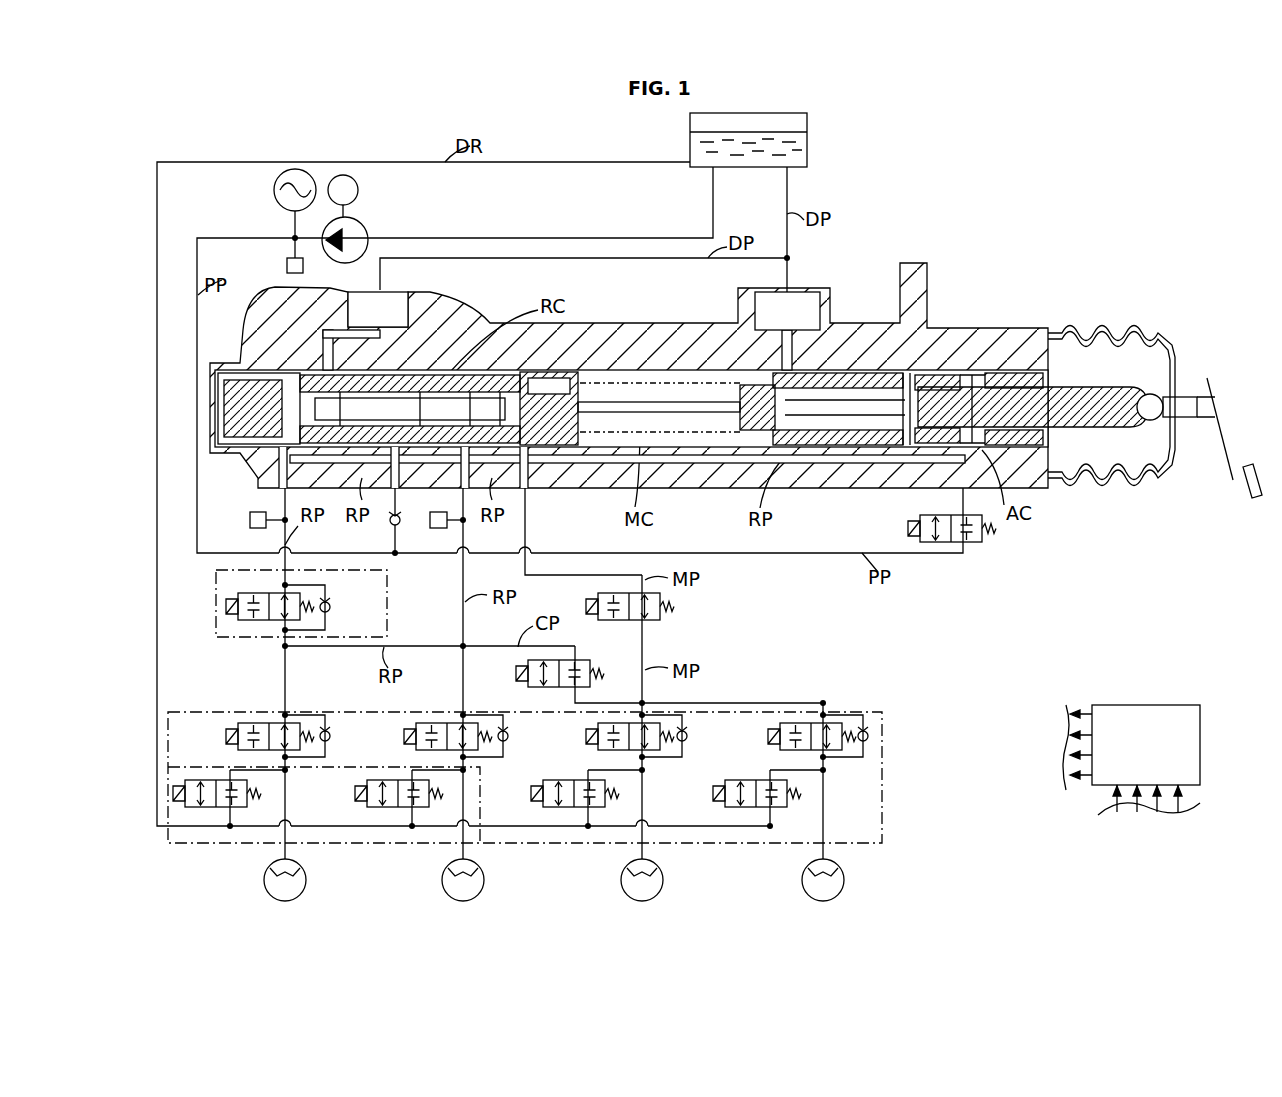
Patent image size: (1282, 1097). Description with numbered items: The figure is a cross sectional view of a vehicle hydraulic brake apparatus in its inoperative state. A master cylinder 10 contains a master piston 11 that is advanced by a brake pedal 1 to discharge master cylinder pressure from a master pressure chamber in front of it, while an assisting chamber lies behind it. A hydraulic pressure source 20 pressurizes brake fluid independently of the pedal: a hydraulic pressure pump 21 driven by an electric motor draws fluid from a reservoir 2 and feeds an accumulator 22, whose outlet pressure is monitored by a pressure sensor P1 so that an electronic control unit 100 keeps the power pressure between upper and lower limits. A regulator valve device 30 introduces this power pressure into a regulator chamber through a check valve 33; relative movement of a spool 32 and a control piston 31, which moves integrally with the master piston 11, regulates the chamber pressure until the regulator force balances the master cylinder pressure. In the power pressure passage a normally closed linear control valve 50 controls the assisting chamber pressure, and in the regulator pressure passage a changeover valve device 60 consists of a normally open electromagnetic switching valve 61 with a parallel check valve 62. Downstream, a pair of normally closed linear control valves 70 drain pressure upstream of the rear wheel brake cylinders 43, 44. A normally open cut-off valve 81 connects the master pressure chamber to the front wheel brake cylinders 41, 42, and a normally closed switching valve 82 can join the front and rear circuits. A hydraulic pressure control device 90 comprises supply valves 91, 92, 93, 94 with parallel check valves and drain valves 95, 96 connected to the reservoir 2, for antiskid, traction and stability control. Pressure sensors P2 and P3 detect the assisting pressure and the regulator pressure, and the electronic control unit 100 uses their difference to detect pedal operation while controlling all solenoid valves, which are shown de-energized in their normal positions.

The brake pedal 1 is at (1228, 442).
The reservoir 2 is at (812, 150).
The master cylinder 10 is at (838, 358).
The master piston 11 is at (860, 392).
The hydraulic pressure source 20 is at (349, 216).
The hydraulic pressure pump 21 is at (368, 227).
The accumulator 22 is at (274, 187).
The regulator valve device 30 is at (418, 366).
The control piston 31 is at (517, 370).
The spool 32 is at (380, 383).
The check valve 33 is at (390, 525).
The wheel brake cylinder 41 is at (840, 866).
The wheel brake cylinder 42 is at (659, 866).
The wheel brake cylinder 43 is at (480, 866).
The wheel brake cylinder 44 is at (302, 866).
The linear control valve 50 is at (975, 544).
The changeover valve device 60 is at (279, 604).
The electromagnetic switching valve 61 is at (262, 593).
The check valve 62 is at (333, 606).
The linear control valve 70 is at (367, 784).
The electromagnetic switching valve 81 is at (650, 622).
The electromagnetic switching valve 82 is at (545, 688).
The hydraulic pressure control device 90 is at (556, 791).
The electromagnetic switching valve 91 is at (785, 724).
The electromagnetic switching valve 92 is at (605, 724).
The electromagnetic switching valve 93 is at (425, 724).
The electromagnetic switching valve 94 is at (248, 724).
The electromagnetic switching valve 95 is at (727, 784).
The electromagnetic switching valve 96 is at (545, 784).
The electronic control unit 100 is at (1140, 705).
The pressure sensor P1 is at (287, 262).
The pressure sensor P2 is at (437, 512).
The pressure sensor P3 is at (250, 514).